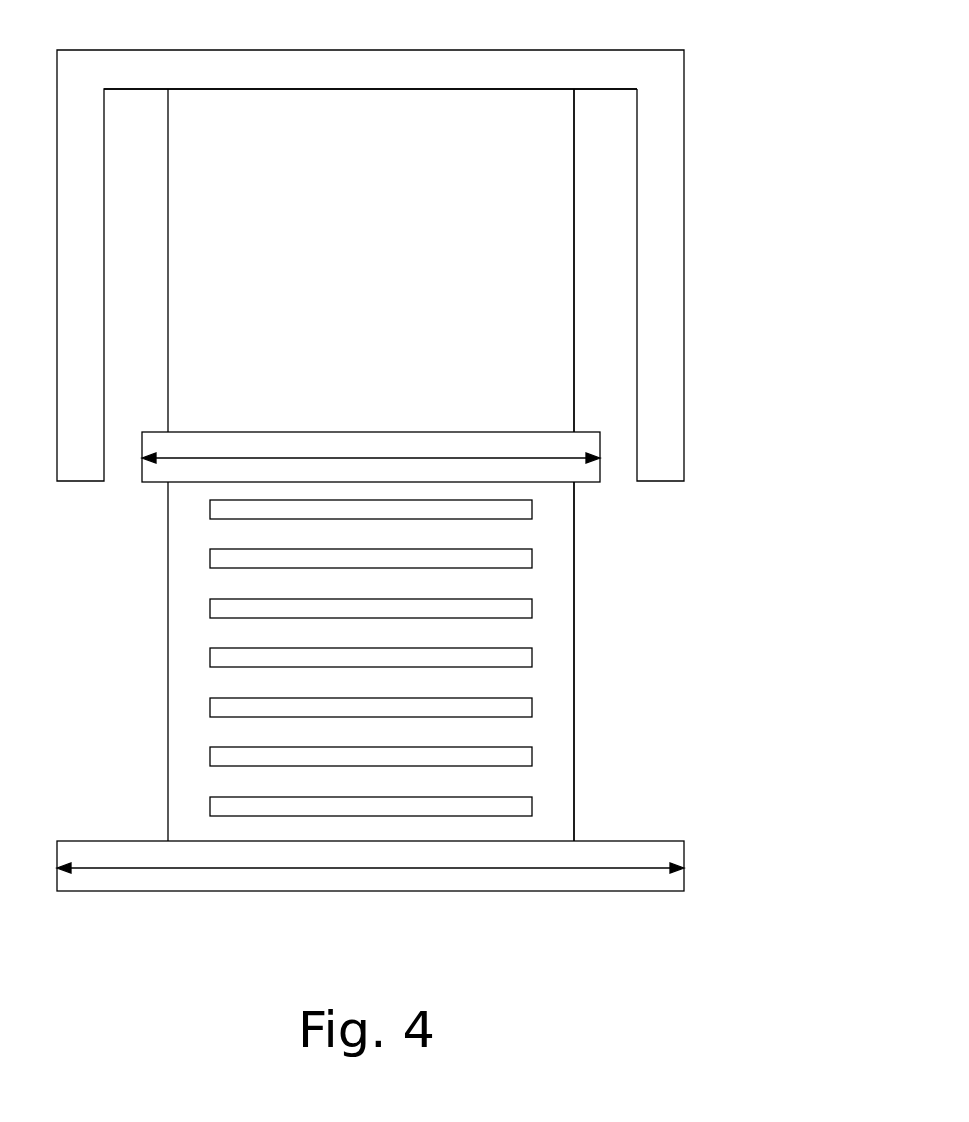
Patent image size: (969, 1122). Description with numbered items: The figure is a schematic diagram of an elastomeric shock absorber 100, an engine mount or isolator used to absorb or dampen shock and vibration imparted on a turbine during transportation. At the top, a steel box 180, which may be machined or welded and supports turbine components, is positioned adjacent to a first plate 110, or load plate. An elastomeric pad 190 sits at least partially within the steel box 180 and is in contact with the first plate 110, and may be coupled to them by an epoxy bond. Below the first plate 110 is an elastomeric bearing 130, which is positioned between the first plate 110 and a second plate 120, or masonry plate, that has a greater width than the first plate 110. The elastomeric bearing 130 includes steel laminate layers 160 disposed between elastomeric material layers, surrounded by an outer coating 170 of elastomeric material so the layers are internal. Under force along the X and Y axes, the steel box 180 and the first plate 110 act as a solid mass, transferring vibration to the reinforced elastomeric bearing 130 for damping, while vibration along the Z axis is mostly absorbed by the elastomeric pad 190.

The elastomeric shock absorber 100 is at (431, 449).
The first plate 110 is at (600, 458).
The second plate 120 is at (612, 841).
The elastomeric bearing 130 is at (574, 720).
The steel laminate layers 160 is at (532, 660).
The outer coating 170 is at (168, 652).
The steel box 180 is at (684, 235).
The elastomeric pad 190 is at (497, 89).